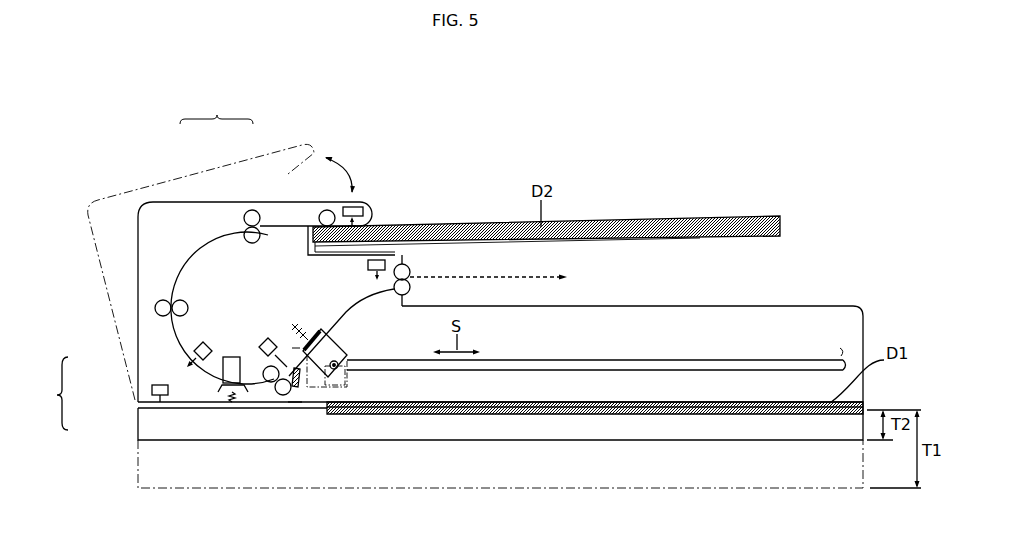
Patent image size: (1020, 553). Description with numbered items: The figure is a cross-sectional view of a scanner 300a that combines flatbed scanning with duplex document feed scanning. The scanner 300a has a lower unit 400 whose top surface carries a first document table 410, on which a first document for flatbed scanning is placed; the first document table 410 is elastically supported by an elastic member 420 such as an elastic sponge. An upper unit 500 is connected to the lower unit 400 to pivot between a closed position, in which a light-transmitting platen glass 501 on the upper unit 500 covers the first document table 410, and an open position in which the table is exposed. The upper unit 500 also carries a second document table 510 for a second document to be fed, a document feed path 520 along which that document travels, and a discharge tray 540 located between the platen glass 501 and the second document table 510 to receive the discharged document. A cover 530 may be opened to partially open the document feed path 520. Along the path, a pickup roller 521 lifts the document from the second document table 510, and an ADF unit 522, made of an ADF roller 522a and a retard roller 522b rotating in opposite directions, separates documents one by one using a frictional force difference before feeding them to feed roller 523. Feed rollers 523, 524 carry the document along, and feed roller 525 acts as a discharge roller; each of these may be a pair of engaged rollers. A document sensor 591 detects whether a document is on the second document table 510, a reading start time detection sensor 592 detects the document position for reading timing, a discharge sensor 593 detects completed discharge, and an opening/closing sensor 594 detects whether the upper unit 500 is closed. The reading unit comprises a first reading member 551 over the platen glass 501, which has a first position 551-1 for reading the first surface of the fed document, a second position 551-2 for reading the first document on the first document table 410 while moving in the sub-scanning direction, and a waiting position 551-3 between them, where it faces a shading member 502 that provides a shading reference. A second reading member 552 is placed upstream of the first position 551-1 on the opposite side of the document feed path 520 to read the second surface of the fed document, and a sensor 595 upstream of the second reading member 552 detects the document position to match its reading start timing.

The scanner 300a is at (42, 393).
The lower unit 400 is at (130, 428).
The first document table 410 is at (837, 405).
The elastic member 420 is at (843, 414).
The upper unit 500 is at (130, 362).
The platen glass 501 is at (813, 399).
The shading member 502 is at (296, 388).
The second document table 510 is at (757, 237).
The document feed path 520 is at (190, 258).
The pickup roller 521 is at (325, 211).
The ADF unit 522 is at (218, 169).
The ADF roller 522a is at (251, 211).
The retard roller 522b is at (245, 234).
The feed roller 523 is at (155, 308).
The feed roller 524 is at (282, 387).
The feed roller 525 is at (411, 270).
The cover 530 is at (138, 252).
The discharge tray 540 is at (693, 306).
The first reading member 551 is at (353, 418).
The first position 551-1 is at (328, 343).
The second position 551-2 is at (342, 387).
The waiting position 551-3 is at (313, 382).
The second reading member 552 is at (233, 357).
The document sensor 591 is at (364, 211).
The reading start time detection sensor 592 is at (267, 338).
The discharge sensor 593 is at (368, 264).
The opening/closing sensor 594 is at (160, 385).
The sensor 595 is at (205, 342).